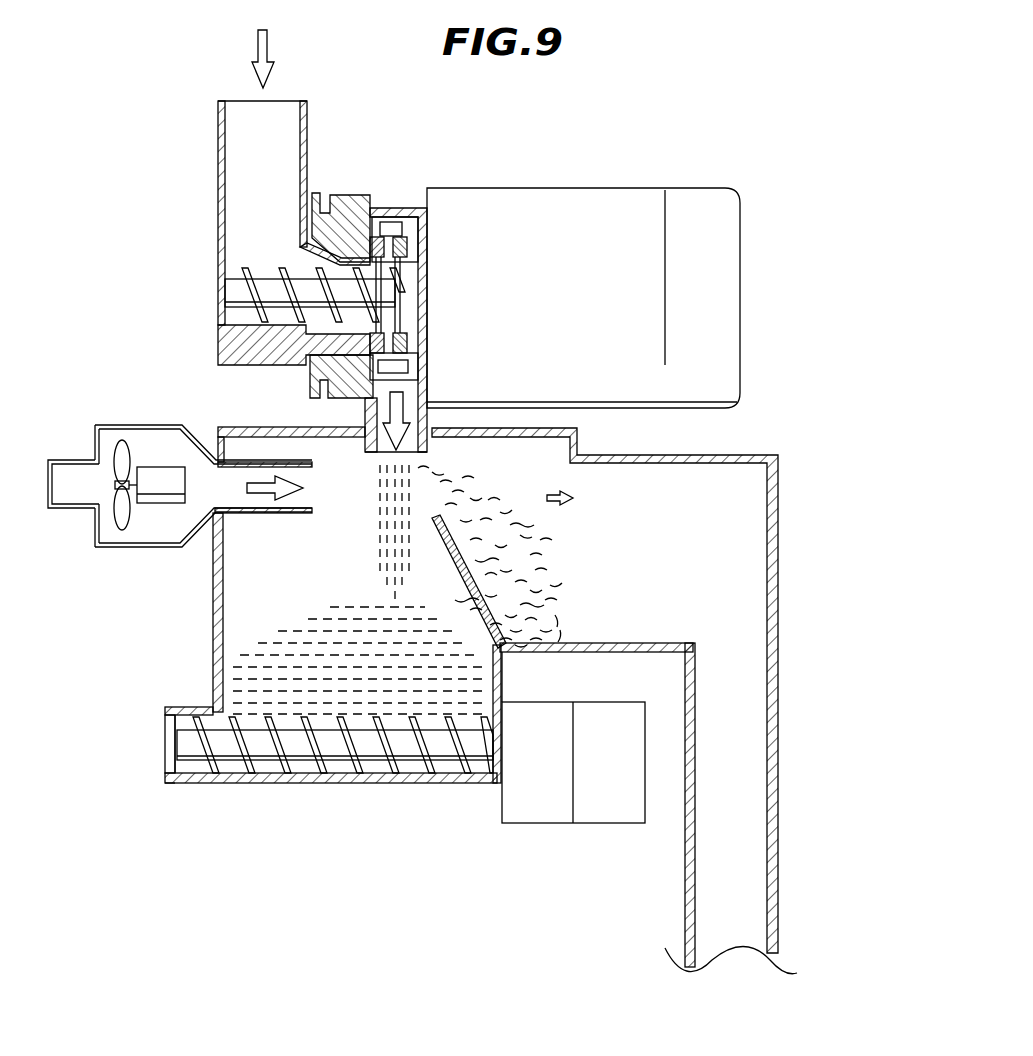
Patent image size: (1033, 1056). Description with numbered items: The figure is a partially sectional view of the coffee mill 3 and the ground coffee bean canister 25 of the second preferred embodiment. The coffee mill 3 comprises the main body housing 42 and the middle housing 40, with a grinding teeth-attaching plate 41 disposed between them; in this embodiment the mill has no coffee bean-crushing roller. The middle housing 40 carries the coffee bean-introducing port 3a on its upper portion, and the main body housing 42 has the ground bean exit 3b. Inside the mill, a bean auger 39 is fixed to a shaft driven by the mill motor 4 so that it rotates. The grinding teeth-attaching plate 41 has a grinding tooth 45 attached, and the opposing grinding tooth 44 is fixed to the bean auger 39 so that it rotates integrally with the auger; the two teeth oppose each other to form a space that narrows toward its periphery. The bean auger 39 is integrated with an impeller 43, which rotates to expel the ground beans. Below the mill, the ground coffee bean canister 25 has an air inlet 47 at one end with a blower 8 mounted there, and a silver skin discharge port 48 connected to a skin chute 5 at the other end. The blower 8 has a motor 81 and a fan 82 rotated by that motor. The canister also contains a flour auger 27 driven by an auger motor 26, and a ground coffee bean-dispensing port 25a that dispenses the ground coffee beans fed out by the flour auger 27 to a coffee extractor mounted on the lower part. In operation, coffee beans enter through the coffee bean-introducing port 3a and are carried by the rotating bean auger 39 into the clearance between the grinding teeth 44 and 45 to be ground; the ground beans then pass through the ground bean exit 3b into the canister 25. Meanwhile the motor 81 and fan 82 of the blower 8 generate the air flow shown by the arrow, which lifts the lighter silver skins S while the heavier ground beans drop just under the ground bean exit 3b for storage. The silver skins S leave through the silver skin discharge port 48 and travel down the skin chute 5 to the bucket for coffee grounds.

The coffee mill 3 is at (210, 168).
The coffee bean-introducing port 3a is at (217, 123).
The ground bean exit 3b is at (410, 397).
The mill motor 4 is at (487, 188).
The skin chute 5 is at (748, 870).
The blower 8 is at (167, 528).
The ground coffee bean canister 25 is at (447, 805).
The ground coffee bean-dispensing port 25a is at (183, 787).
The auger motor 26 is at (549, 802).
The flour auger 27 is at (298, 752).
The bean auger 39 is at (272, 287).
The middle housing 40 is at (235, 340).
The grinding teeth-attaching plate 41 is at (318, 193).
The main body housing 42 is at (387, 208).
The impeller 43 is at (400, 223).
The grinding tooth 44 is at (406, 347).
The grinding tooth 45 is at (376, 338).
The air inlet 47 is at (68, 490).
The silver skin discharge port 48 is at (545, 425).
The motor 81 is at (153, 487).
The fan 82 is at (120, 450).
The silver skins S is at (548, 567).